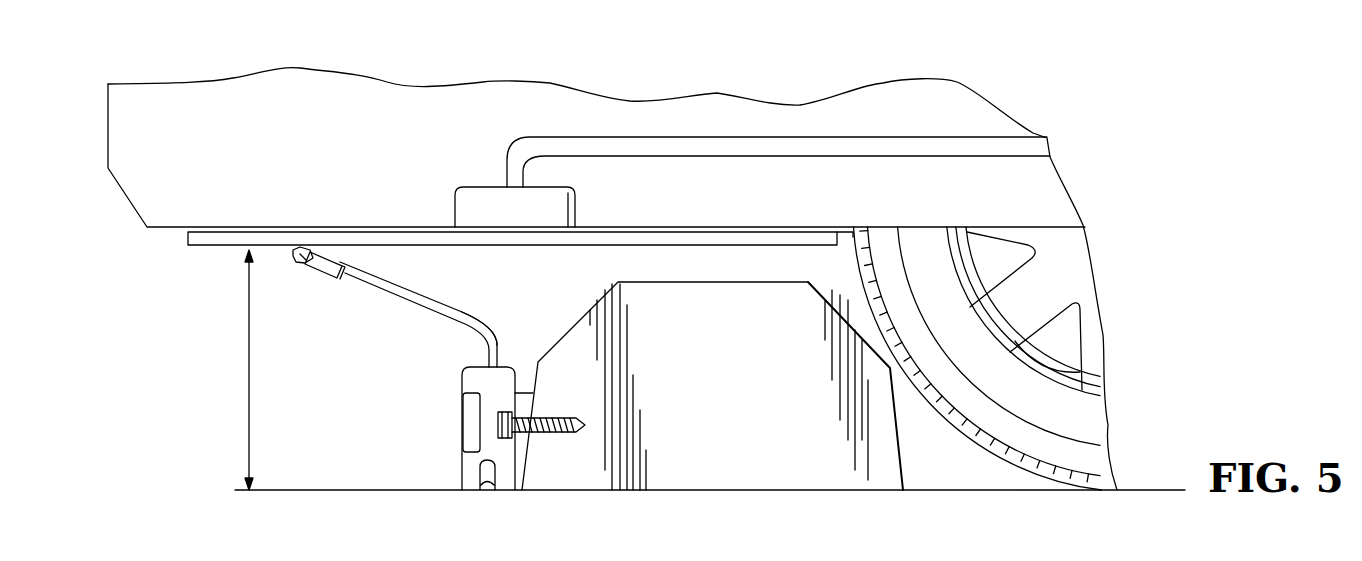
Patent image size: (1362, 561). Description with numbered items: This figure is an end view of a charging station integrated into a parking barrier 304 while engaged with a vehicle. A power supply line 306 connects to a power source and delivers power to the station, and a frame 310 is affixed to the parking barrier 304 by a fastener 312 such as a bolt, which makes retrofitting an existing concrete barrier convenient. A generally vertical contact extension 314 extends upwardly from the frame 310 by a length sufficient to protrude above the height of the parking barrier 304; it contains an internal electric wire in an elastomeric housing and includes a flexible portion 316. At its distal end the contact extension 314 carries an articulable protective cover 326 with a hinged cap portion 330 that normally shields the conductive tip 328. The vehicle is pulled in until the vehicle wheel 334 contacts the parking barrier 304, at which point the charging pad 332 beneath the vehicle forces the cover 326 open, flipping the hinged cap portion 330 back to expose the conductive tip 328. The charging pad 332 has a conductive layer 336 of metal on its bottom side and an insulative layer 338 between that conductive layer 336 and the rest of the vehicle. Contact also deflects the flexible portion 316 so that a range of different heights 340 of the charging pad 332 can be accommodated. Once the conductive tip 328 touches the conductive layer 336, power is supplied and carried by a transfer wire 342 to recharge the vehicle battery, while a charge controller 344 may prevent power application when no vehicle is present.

The parking barrier 304 is at (897, 437).
The power supply line 306 is at (483, 470).
The frame 310 is at (462, 463).
The fastener 312 is at (555, 438).
The contact extension 314 is at (440, 323).
The flexible portion 316 is at (482, 318).
The protective cover 326 is at (320, 270).
The conductive tip 328 is at (300, 250).
The hinged cap portion 330 is at (300, 264).
The charging pad 332 is at (855, 246).
The vehicle wheel 334 is at (860, 290).
The conductive layer 336 is at (668, 250).
The insulative layer 338 is at (700, 231).
The range of different heights 340 is at (248, 368).
The transfer wire 342 is at (697, 135).
The charge controller 344 is at (463, 423).